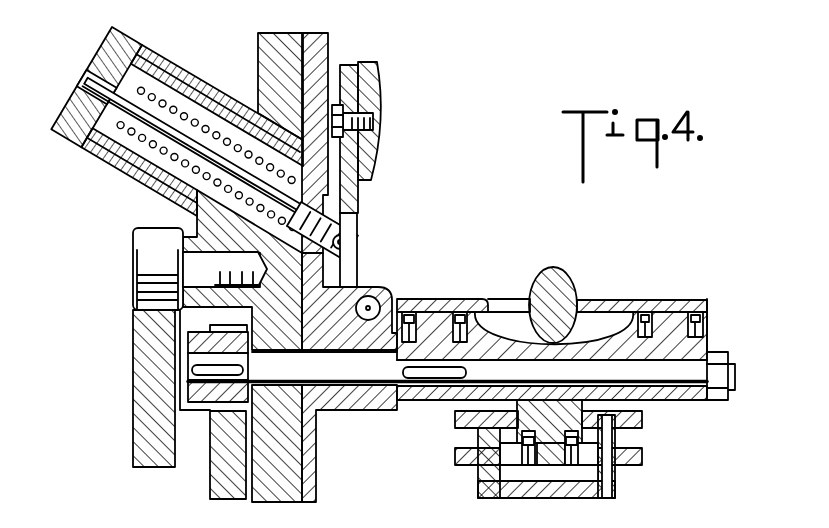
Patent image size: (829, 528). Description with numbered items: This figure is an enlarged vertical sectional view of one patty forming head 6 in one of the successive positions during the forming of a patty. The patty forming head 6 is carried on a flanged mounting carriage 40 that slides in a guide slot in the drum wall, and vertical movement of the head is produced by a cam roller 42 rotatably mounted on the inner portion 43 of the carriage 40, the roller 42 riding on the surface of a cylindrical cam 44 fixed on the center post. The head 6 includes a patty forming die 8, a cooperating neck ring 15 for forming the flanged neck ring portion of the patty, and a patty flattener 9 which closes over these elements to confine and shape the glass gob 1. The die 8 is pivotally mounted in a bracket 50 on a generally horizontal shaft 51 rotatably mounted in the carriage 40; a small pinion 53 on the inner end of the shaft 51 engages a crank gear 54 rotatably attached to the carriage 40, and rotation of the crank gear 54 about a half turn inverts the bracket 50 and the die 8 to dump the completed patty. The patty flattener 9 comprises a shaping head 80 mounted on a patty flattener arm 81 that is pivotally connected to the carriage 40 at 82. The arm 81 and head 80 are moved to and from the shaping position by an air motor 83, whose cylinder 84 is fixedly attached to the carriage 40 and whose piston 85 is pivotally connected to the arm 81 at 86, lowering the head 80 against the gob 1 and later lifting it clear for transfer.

The glass gob 1 is at (578, 248).
The patty forming head 6 is at (706, 302).
The patty forming die 8 is at (613, 333).
The patty flattener 9 is at (362, 94).
The neck ring 15 is at (663, 312).
The mounting carriage 40 is at (312, 476).
The cam roller 42 is at (143, 248).
The inner portion 43 is at (200, 226).
The cylindrical cam 44 is at (147, 340).
The bracket 50 is at (657, 400).
The shaft 51 is at (622, 380).
The pinion 53 is at (213, 397).
The crank gear 54 is at (217, 482).
The shaping head 80 is at (372, 160).
The patty flattener arm 81 is at (358, 212).
The pivotal connection 82 is at (375, 298).
The air motor 83 is at (186, 97).
The cylinder 84 is at (158, 70).
The piston 85 is at (122, 120).
The pivotal connection 86 is at (348, 239).